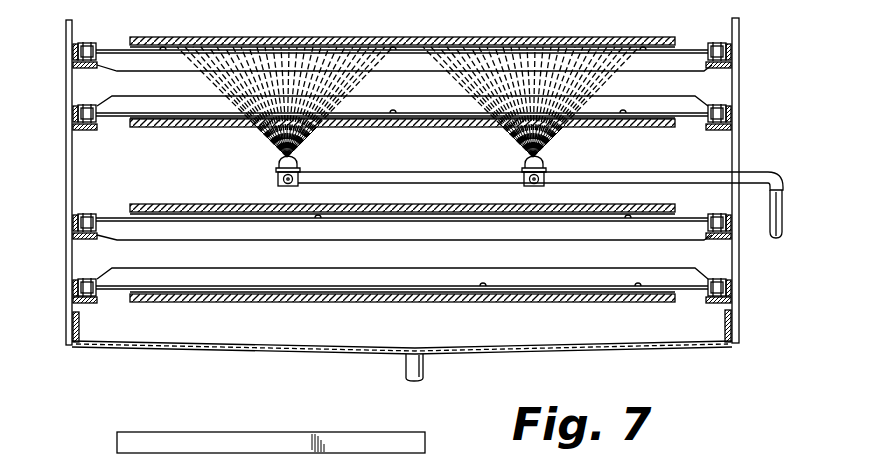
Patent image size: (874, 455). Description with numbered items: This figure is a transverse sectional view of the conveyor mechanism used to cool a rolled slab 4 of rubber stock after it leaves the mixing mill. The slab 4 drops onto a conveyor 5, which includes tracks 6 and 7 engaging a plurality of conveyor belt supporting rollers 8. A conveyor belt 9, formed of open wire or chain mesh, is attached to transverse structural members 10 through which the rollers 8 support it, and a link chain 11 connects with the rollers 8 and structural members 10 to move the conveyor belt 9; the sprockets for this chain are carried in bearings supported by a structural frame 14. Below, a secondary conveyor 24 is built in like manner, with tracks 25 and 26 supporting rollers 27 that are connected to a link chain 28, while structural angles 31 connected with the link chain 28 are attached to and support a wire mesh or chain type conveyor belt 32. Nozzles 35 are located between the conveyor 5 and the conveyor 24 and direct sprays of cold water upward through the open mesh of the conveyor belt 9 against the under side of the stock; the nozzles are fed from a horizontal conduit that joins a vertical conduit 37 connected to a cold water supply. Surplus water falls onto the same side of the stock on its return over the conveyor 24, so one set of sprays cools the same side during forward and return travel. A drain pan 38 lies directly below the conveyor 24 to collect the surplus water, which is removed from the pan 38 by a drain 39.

The slab 4 is at (563, 36).
The conveyor 5 is at (714, 82).
The track 6 is at (82, 128).
The track 7 is at (77, 72).
The conveyor belt supporting rollers 8 is at (87, 44).
The conveyor belt 9 is at (142, 43).
The transverse structural members 10 is at (117, 68).
The link chain 11 is at (78, 44).
The structural frame 14 is at (736, 78).
The secondary conveyor 24 is at (717, 257).
The track 25 is at (85, 236).
The track 26 is at (80, 283).
The rollers 27 is at (88, 215).
The link chain 28 is at (95, 214).
The structural angles 31 is at (160, 233).
The conveyor belt 32 is at (147, 207).
The nozzles 35 is at (295, 163).
The vertical conduit 37 is at (753, 172).
The drain pan 38 is at (279, 329).
The drain 39 is at (407, 356).